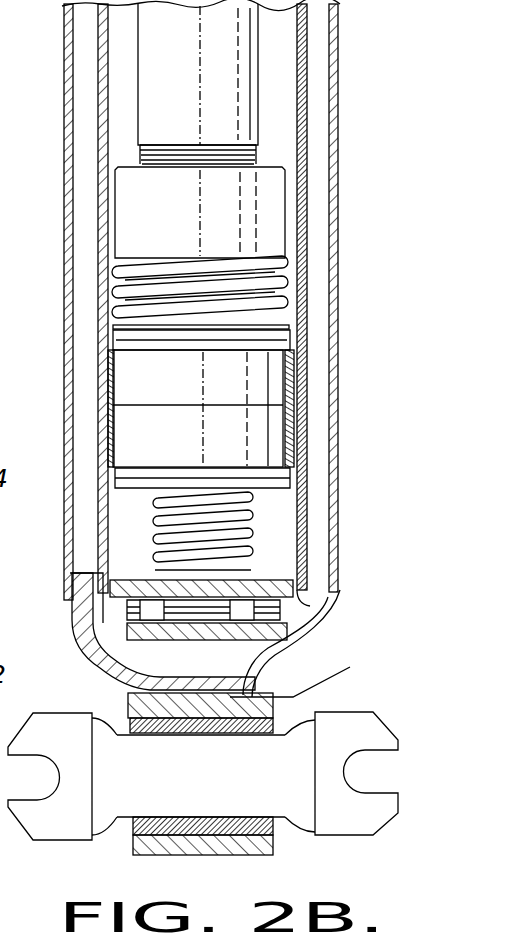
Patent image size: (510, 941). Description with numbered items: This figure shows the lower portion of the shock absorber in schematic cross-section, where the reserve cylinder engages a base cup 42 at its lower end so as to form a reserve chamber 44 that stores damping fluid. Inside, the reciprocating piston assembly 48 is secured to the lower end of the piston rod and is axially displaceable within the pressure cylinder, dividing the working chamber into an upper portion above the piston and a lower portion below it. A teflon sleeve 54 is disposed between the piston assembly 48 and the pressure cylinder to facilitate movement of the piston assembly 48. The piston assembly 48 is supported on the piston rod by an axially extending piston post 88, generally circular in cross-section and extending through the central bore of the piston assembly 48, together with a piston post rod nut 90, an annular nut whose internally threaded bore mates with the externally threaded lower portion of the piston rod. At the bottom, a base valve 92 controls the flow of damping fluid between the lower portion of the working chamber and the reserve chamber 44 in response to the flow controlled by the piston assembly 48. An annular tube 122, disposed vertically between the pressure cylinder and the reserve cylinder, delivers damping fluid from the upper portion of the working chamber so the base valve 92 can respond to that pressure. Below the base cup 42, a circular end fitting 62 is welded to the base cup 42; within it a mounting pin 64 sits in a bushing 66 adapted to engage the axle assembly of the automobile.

The base cup 42 is at (287, 633).
The reserve chamber 44 is at (320, 483).
The piston assembly 48 is at (273, 427).
The teflon sleeve 54 is at (310, 372).
The circular end fitting 62 is at (282, 697).
The mounting pin 64 is at (360, 727).
The bushing 66 is at (275, 815).
The piston post 88 is at (240, 62).
The piston post rod nut 90 is at (265, 200).
The base valve 92 is at (143, 568).
The annular tube 122 is at (313, 540).